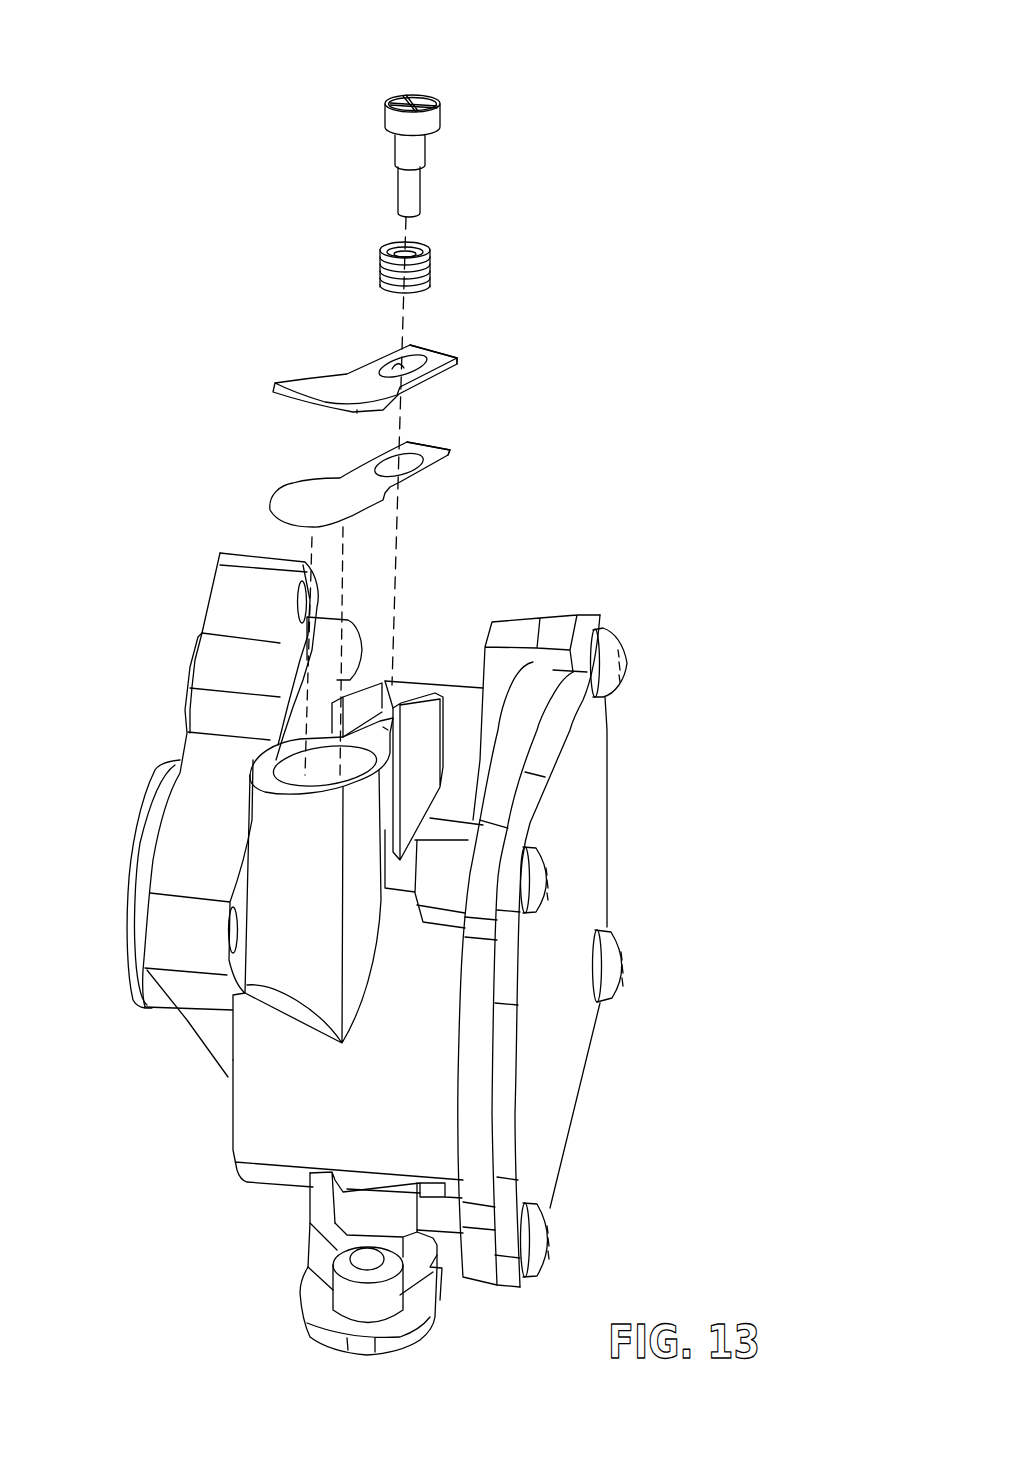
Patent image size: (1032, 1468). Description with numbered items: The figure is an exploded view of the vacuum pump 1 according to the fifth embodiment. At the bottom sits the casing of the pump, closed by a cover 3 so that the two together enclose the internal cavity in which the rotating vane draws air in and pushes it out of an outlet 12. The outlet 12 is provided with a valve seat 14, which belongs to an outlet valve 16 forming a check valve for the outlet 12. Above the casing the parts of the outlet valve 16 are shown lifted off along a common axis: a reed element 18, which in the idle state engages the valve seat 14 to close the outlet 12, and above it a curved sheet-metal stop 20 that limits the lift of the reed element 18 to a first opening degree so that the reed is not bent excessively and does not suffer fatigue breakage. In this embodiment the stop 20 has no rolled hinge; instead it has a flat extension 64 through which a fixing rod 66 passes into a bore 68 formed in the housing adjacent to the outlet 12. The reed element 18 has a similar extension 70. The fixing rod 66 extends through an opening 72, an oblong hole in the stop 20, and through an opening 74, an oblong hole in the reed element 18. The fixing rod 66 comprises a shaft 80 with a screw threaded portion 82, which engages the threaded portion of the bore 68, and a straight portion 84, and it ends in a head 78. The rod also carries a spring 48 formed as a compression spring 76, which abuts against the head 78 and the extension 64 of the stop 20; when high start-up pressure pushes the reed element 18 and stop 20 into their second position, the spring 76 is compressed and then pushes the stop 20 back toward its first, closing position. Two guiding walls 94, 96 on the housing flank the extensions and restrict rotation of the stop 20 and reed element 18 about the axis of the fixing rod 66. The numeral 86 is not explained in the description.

The vacuum pump 1 is at (136, 334).
The cover 3 is at (555, 1125).
The outlet 12 is at (286, 766).
The valve seat 14 is at (303, 787).
The outlet valve 16 is at (338, 243).
The reed element 18 is at (371, 466).
The stop 20 is at (385, 364).
The spring 48 is at (456, 246).
The flat extension 64 is at (457, 361).
The fixing rod 66 is at (457, 139).
The bore 68 is at (390, 707).
The extension 70 is at (415, 454).
The opening 72 is at (397, 362).
The opening 74 is at (440, 453).
The compression spring 76 is at (432, 269).
The head 78 is at (411, 89).
The shaft 80 is at (402, 164).
The screw threaded portion 82 is at (421, 203).
The straight portion 84 is at (437, 141).
The shank shoulder 86 is at (428, 163).
The first guiding wall 94 is at (337, 697).
The second guiding wall 96 is at (427, 750).